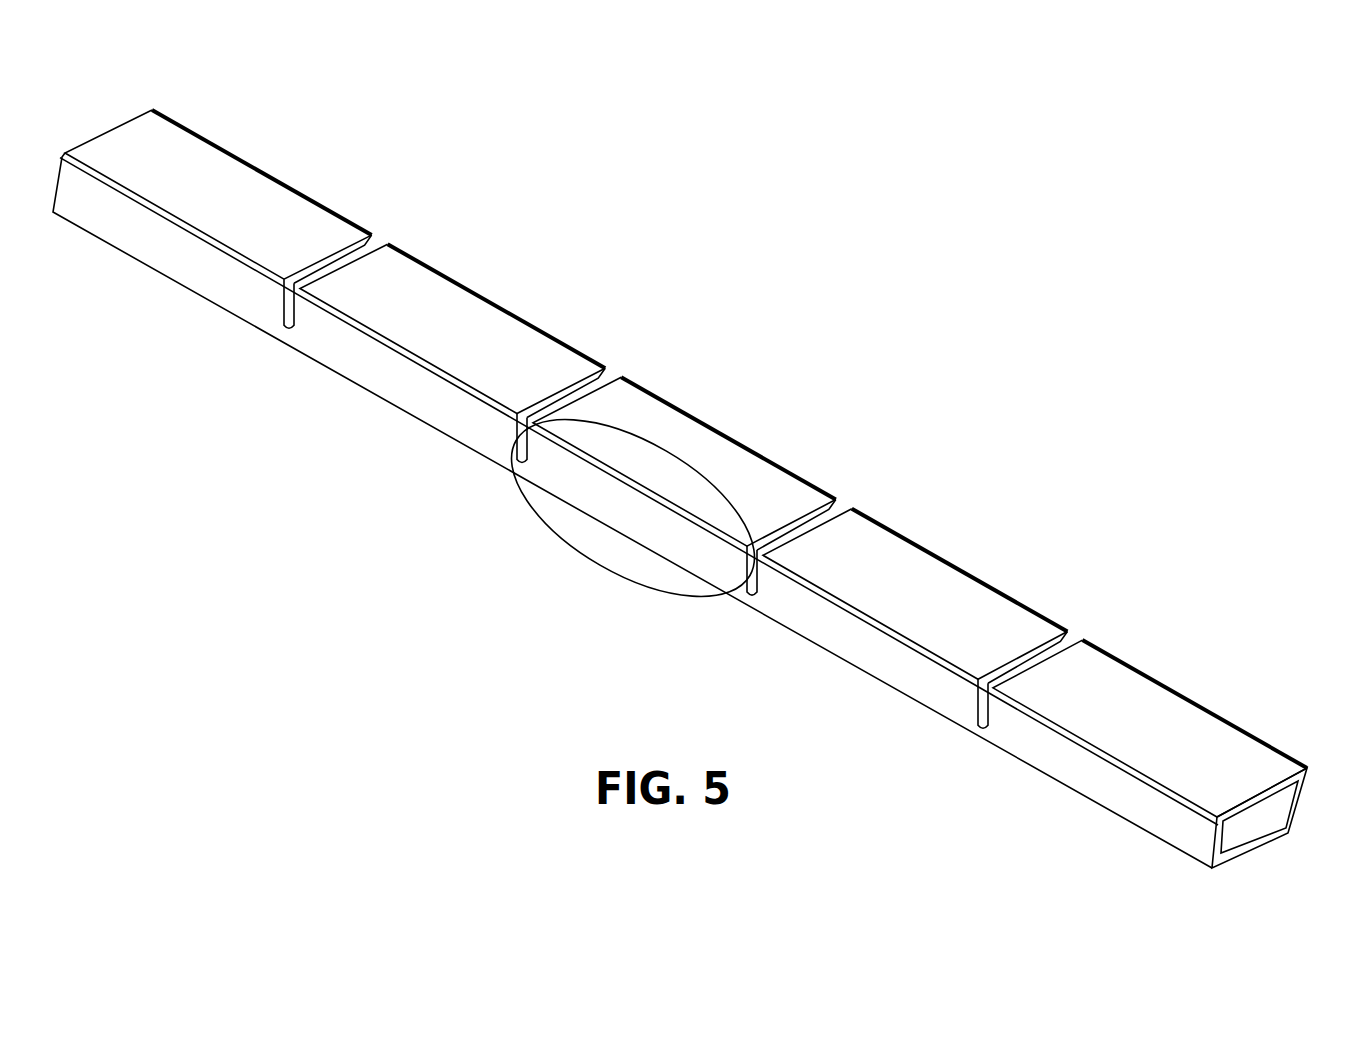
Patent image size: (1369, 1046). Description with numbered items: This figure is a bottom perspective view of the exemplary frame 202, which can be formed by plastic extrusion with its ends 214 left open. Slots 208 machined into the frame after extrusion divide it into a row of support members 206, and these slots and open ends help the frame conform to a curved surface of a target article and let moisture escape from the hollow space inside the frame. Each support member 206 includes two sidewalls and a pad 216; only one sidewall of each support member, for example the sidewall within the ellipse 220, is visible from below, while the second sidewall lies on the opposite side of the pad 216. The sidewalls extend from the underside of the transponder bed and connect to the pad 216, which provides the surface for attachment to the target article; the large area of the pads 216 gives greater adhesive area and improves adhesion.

The frame 202 is at (192, 101).
The support member 206 is at (377, 362).
The slot 208 is at (284, 303).
The open end 214 is at (1245, 817).
The pad 216 is at (267, 198).
The ellipse 220 is at (620, 568).